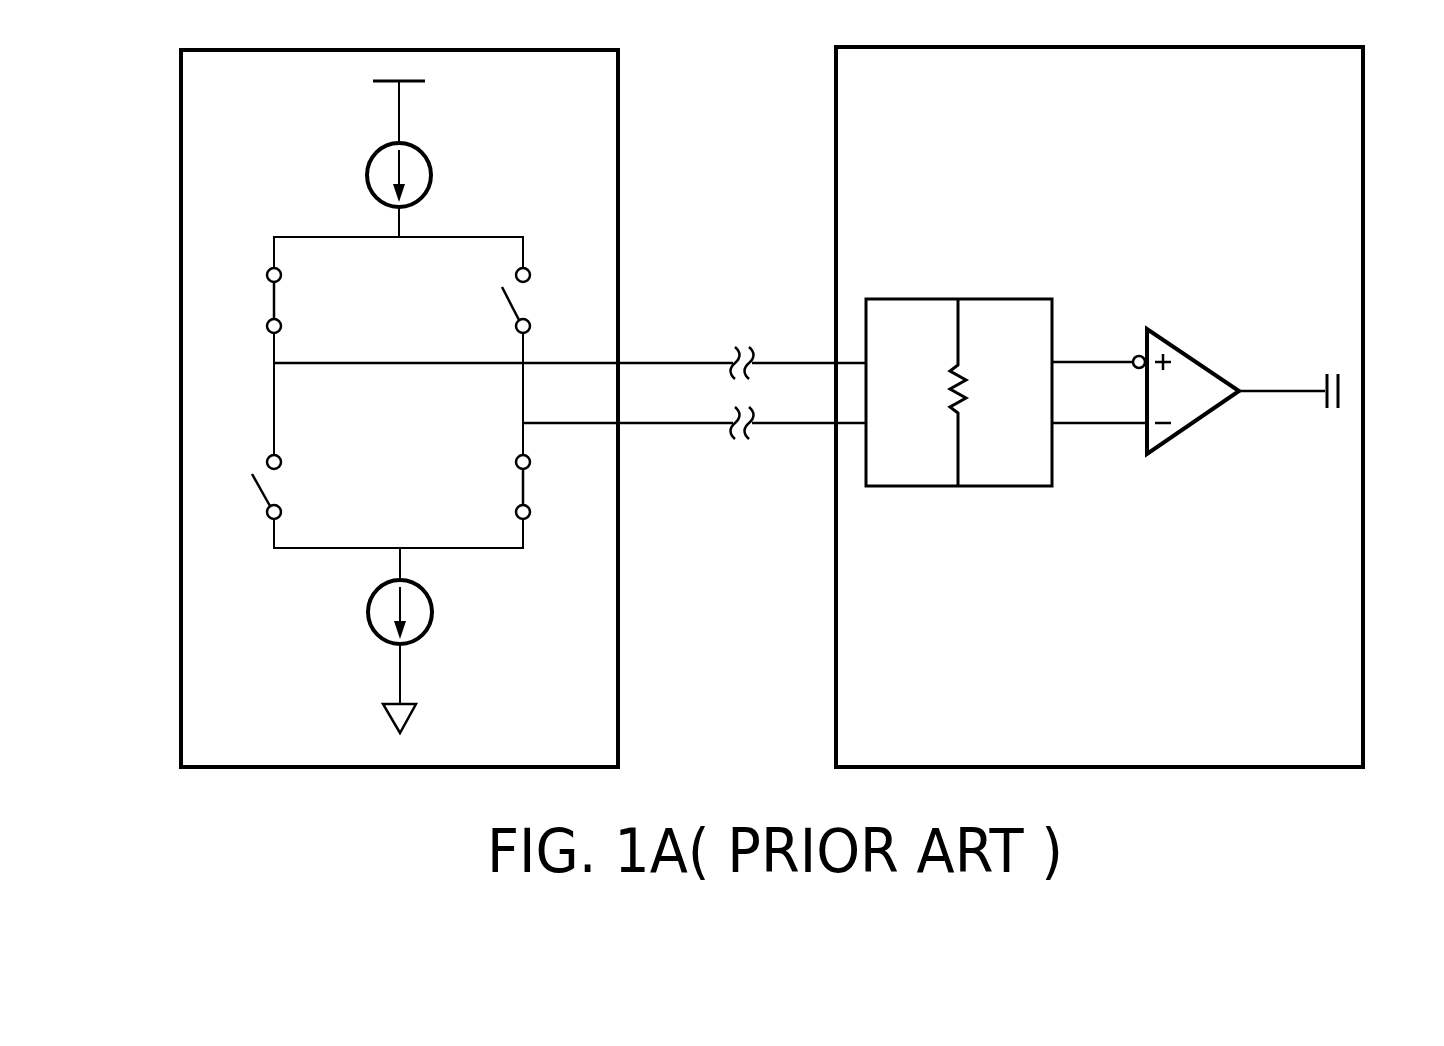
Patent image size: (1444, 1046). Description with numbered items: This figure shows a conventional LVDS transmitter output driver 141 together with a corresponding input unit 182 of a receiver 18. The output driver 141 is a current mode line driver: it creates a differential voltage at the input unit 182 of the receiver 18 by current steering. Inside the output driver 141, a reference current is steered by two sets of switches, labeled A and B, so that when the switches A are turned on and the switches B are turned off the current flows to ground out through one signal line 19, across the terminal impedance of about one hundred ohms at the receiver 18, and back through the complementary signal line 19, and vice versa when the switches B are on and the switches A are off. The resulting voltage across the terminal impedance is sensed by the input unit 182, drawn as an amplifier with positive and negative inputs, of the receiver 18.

The output driver 141 is at (181, 112).
The receiver 18 is at (1364, 108).
The signal line 19 is at (679, 362).
The input unit 182 is at (1192, 358).